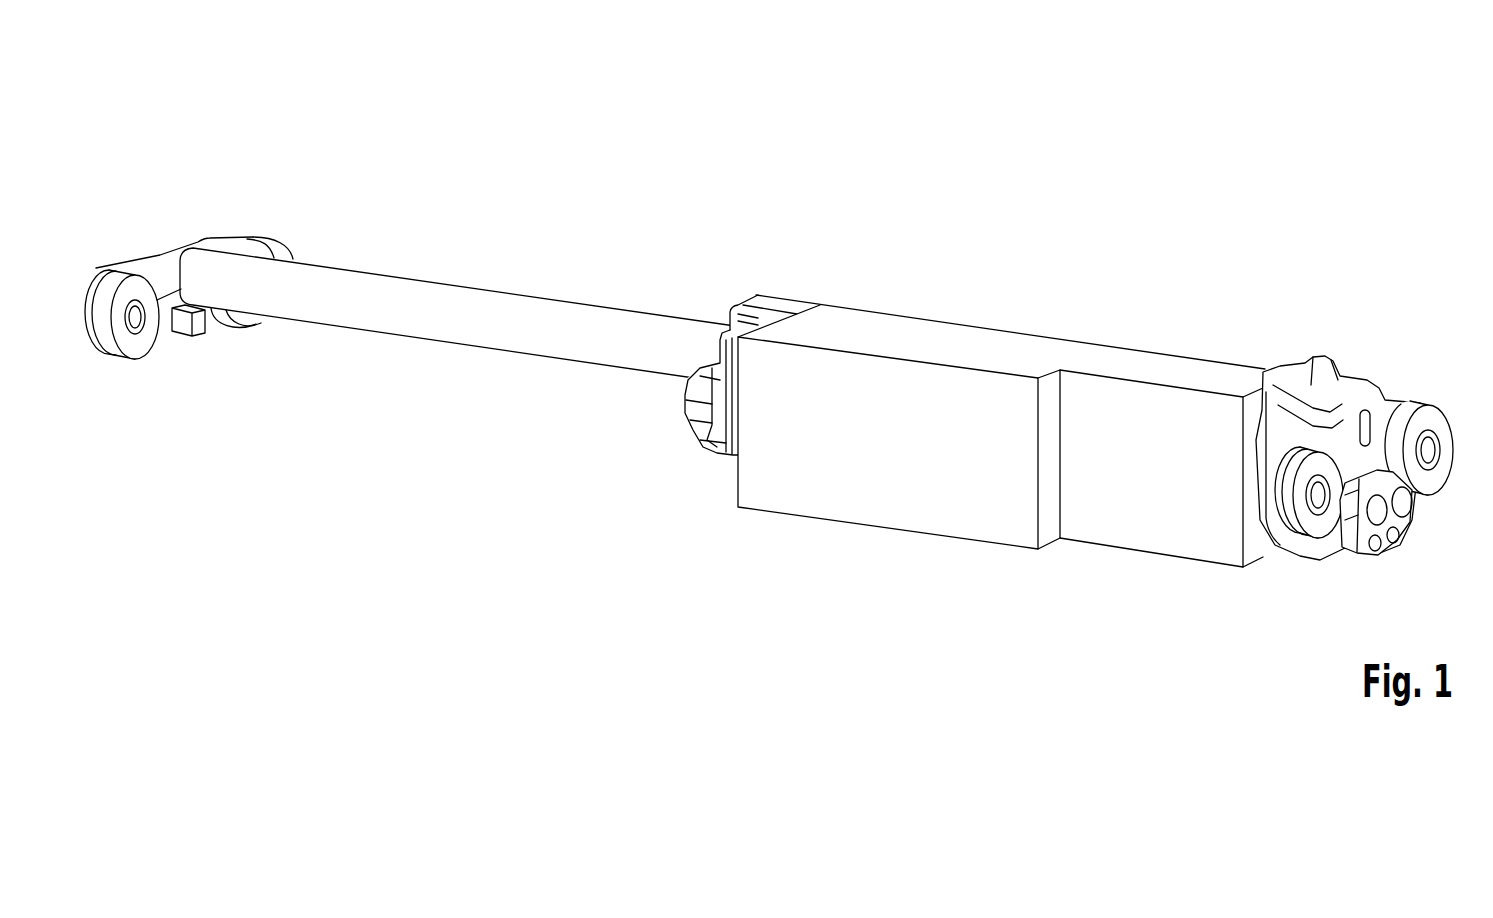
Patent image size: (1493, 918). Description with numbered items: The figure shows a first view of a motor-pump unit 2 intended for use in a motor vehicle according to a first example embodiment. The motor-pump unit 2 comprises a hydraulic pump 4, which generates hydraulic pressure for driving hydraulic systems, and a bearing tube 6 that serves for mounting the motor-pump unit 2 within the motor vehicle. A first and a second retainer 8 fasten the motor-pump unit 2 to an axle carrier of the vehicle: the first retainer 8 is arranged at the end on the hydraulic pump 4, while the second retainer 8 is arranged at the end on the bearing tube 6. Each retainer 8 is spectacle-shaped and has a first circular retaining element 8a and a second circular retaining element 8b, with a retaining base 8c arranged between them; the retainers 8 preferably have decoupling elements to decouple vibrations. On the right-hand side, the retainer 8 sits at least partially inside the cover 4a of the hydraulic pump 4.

The motor-pump unit 2 is at (769, 335).
The hydraulic pump 4 is at (1011, 356).
The cover 4a is at (1335, 388).
The bearing tube 6 is at (553, 315).
The retainer 8 is at (293, 232).
The first circular retaining element 8a is at (262, 327).
The second circular retaining element 8b is at (132, 347).
The retaining base 8c is at (168, 250).